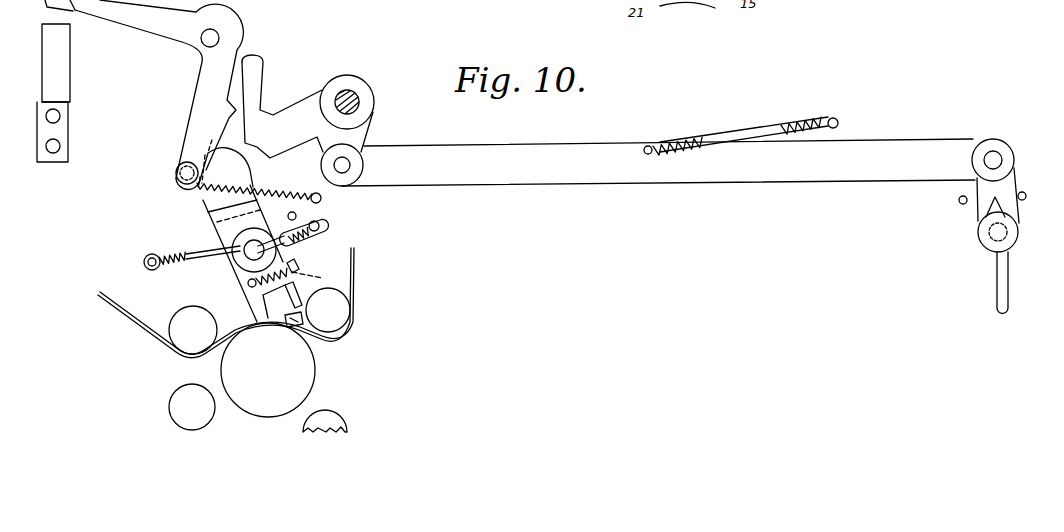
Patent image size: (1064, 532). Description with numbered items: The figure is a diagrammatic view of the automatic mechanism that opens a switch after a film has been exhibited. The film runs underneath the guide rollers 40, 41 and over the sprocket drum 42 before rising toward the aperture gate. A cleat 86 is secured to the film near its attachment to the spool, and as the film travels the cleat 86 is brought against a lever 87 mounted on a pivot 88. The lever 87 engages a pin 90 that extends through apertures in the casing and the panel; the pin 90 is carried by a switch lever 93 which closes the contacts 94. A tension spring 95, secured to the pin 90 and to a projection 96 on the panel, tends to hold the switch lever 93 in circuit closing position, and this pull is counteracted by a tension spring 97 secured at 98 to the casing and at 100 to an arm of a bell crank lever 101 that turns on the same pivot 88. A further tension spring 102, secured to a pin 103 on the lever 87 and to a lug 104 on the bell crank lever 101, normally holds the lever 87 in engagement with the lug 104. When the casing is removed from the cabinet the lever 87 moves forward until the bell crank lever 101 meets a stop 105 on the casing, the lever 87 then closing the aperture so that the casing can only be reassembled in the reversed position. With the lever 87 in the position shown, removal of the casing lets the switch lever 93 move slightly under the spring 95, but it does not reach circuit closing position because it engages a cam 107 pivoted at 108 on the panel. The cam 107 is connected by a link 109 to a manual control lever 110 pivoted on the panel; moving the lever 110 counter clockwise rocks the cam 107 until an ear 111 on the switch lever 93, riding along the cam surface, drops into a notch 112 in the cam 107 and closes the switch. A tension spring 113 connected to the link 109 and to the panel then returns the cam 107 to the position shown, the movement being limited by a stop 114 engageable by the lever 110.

The guide roller 40 is at (193, 330).
The guide roller 41 is at (328, 310).
The sprocket drum 42 is at (268, 370).
The cleat 86 is at (303, 322).
The lever 87 is at (213, 212).
The pivot 88 is at (262, 250).
The pin 90 is at (175, 181).
The switch lever 93 is at (195, 108).
The contacts 94 is at (55, 56).
The tension spring 95 is at (275, 188).
The projection 96 is at (321, 199).
The tension spring 97 is at (184, 262).
The securing point on casing 98 is at (144, 262).
The securing point on bell crank arm 100 is at (326, 228).
The bell crank lever 101 is at (262, 249).
The tension spring 102 is at (302, 277).
The pin 103 is at (248, 284).
The lug 104 is at (299, 266).
The stop 105 is at (289, 215).
The cam 107 is at (262, 118).
The pivot 108 is at (358, 100).
The link 109 is at (535, 170).
The manual control lever 110 is at (1008, 280).
The ear 111 is at (227, 115).
The notch 112 is at (267, 147).
The tension spring 113 is at (795, 126).
The stop 114 is at (959, 201).